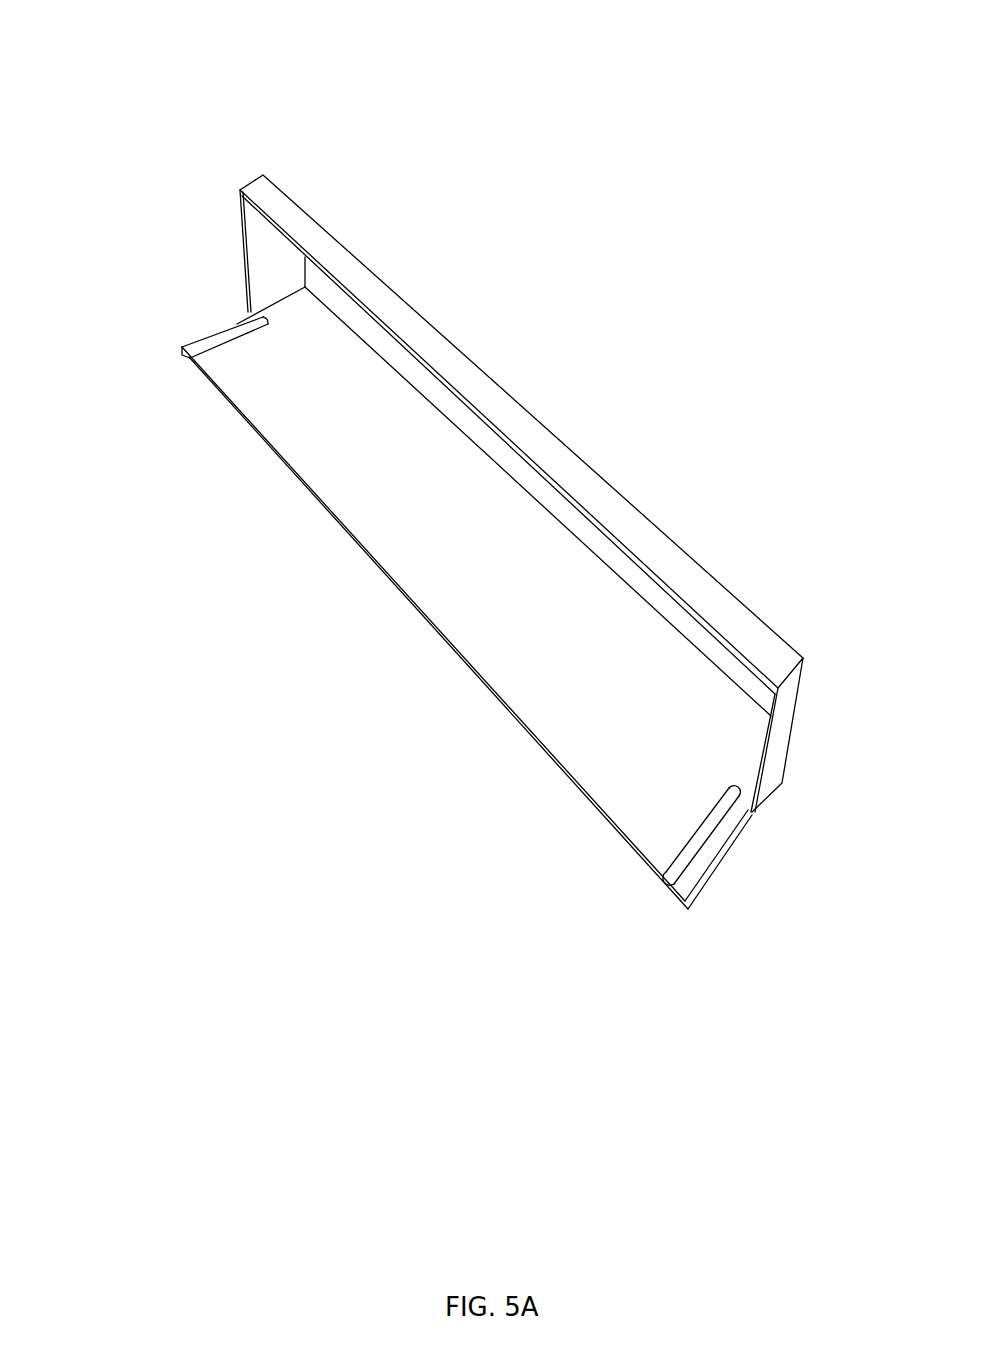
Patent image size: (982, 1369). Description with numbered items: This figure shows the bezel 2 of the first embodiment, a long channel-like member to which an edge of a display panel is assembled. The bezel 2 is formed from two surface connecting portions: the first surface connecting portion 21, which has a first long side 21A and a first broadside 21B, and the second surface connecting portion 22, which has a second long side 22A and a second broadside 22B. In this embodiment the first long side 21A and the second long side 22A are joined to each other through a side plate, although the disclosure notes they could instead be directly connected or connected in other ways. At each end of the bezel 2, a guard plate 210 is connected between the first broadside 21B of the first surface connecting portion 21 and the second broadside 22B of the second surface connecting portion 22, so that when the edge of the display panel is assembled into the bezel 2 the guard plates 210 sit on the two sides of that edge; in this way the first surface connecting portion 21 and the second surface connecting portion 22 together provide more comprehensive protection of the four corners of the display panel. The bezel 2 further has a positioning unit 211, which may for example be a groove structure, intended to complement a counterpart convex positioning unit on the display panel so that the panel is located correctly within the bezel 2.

The bezel 2 is at (158, 48).
The first surface connecting portion 21 is at (645, 540).
The first long side 21A is at (567, 442).
The first broadside 21B is at (248, 184).
The guard plate 210 is at (272, 235).
The second surface connecting portion 22 is at (677, 812).
The second long side 22A is at (497, 472).
The second broadside 22B is at (208, 330).
The positioning unit 211 is at (230, 340).